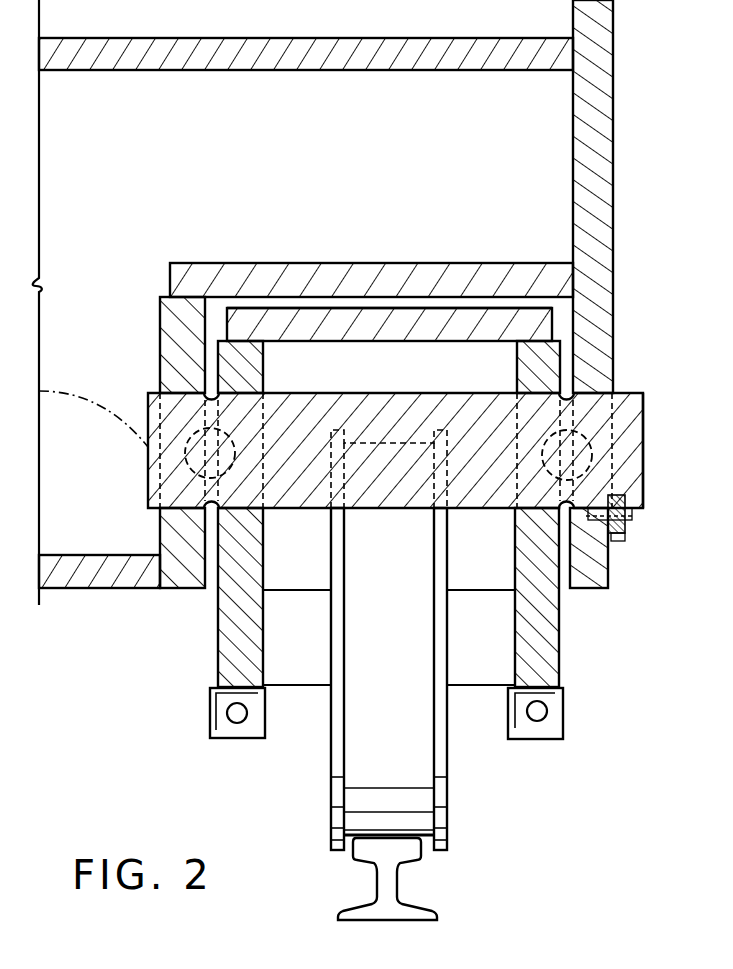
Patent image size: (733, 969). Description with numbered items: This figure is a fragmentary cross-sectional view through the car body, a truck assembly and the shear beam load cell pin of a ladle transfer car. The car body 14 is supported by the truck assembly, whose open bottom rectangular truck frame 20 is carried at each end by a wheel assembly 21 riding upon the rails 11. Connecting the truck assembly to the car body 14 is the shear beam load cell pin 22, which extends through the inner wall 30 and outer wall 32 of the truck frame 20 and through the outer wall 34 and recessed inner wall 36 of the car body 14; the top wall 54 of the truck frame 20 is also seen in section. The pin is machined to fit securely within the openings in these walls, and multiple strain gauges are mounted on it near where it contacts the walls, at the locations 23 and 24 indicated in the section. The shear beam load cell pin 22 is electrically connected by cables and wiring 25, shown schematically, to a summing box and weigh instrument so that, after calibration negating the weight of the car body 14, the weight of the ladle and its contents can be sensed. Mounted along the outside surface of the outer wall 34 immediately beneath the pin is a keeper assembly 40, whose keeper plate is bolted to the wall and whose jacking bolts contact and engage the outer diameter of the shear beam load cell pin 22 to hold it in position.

The rails 11 is at (397, 872).
The car body 14 is at (348, 34).
The truck frame 20 is at (570, 624).
The wheel assembly 21 is at (452, 753).
The shear beam load cell pin 22 is at (643, 460).
The strain gauge location 23 is at (188, 464).
The strain gauge location 24 is at (643, 418).
The cables and wiring 25 is at (100, 418).
The inner wall 30 is at (257, 352).
The outer wall 32 is at (531, 373).
The outer wall 34 is at (592, 313).
The recessed inner wall 36 is at (160, 343).
The keeper assembly 40 is at (628, 532).
The top wall 54 is at (358, 327).